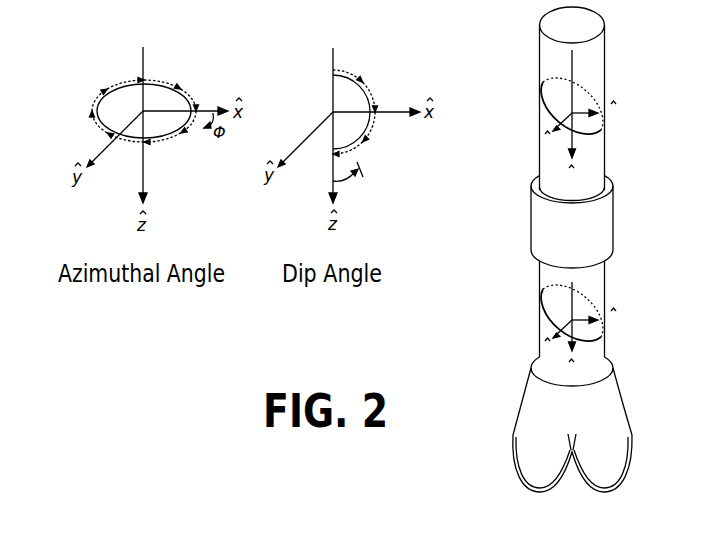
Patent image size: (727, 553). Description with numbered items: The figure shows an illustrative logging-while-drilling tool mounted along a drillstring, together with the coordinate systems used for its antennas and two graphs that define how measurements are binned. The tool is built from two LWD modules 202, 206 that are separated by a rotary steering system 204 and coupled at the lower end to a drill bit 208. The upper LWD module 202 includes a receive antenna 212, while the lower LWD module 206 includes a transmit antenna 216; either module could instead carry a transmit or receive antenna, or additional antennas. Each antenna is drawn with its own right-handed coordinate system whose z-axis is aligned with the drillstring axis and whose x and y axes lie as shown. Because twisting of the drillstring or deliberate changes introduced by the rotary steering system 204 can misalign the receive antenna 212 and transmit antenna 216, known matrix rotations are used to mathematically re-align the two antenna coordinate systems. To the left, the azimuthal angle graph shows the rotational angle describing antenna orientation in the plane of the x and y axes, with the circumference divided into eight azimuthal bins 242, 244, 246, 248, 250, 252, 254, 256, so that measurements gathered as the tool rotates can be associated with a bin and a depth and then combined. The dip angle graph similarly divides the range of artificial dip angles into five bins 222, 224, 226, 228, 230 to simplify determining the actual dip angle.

The LWD module 202 is at (607, 65).
The rotary steering system 204 is at (613, 207).
The LWD module 206 is at (607, 303).
The drill bit 208 is at (620, 397).
The receive antenna 212 is at (557, 112).
The transmit antenna 216 is at (557, 318).
The dip angle bin 222 is at (338, 67).
The dip angle bin 224 is at (366, 78).
The dip angle bin 226 is at (373, 113).
The dip angle bin 228 is at (367, 143).
The dip angle bin 230 is at (333, 173).
The azimuthal bin 242 is at (192, 131).
The azimuthal bin 244 is at (149, 143).
The azimuthal bin 246 is at (125, 145).
The azimuthal bin 248 is at (103, 133).
The azimuthal bin 250 is at (96, 105).
The azimuthal bin 252 is at (142, 81).
The azimuthal bin 254 is at (147, 80).
The azimuthal bin 256 is at (198, 105).